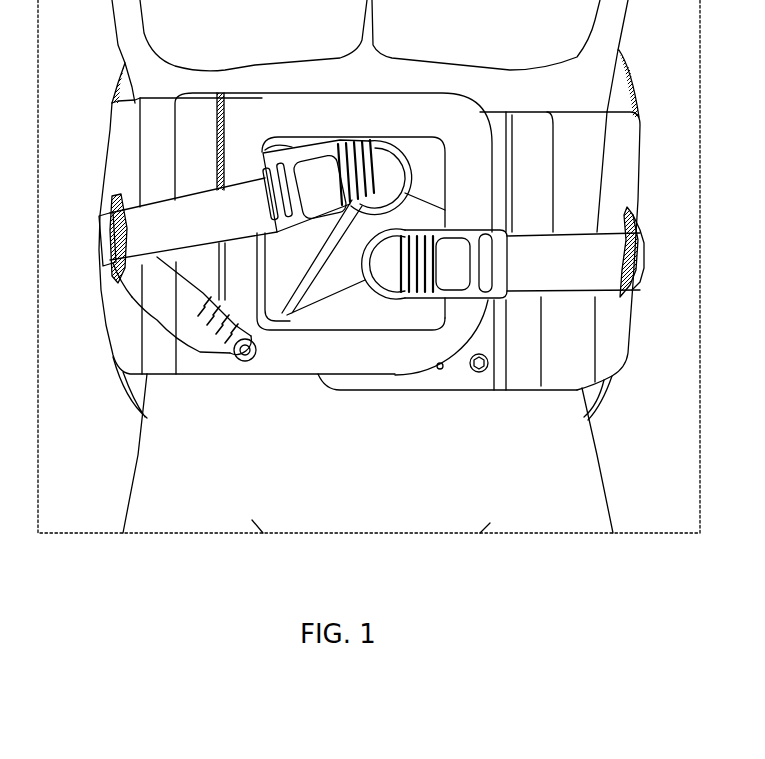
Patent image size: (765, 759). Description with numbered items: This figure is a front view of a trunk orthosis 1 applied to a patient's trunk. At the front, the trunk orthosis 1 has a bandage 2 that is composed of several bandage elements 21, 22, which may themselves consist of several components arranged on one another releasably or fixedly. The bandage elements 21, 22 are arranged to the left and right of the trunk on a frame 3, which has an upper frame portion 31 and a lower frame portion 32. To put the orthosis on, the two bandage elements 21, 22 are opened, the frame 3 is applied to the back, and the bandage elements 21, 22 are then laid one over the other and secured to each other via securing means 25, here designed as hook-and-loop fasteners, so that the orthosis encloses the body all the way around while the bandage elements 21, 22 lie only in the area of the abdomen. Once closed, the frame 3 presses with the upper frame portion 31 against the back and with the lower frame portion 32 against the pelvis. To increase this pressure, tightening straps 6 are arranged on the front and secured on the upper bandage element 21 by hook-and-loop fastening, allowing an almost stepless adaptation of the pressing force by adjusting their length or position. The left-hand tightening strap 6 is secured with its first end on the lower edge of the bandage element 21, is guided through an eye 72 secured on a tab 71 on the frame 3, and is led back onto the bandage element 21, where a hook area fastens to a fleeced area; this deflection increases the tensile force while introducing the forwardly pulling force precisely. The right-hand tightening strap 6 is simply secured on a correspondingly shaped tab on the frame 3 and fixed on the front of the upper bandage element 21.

The trunk orthosis 1 is at (655, 349).
The bandage 2 is at (125, 337).
The bandage element 21 is at (187, 158).
The bandage element 22 is at (575, 168).
The securing means 25 is at (440, 369).
The frame 3 is at (107, 97).
The upper frame portion 31 is at (115, 88).
The lower frame portion 32 is at (133, 410).
The tightening strap 6 is at (186, 300).
The tab 71 is at (103, 250).
The eye 72 is at (110, 280).